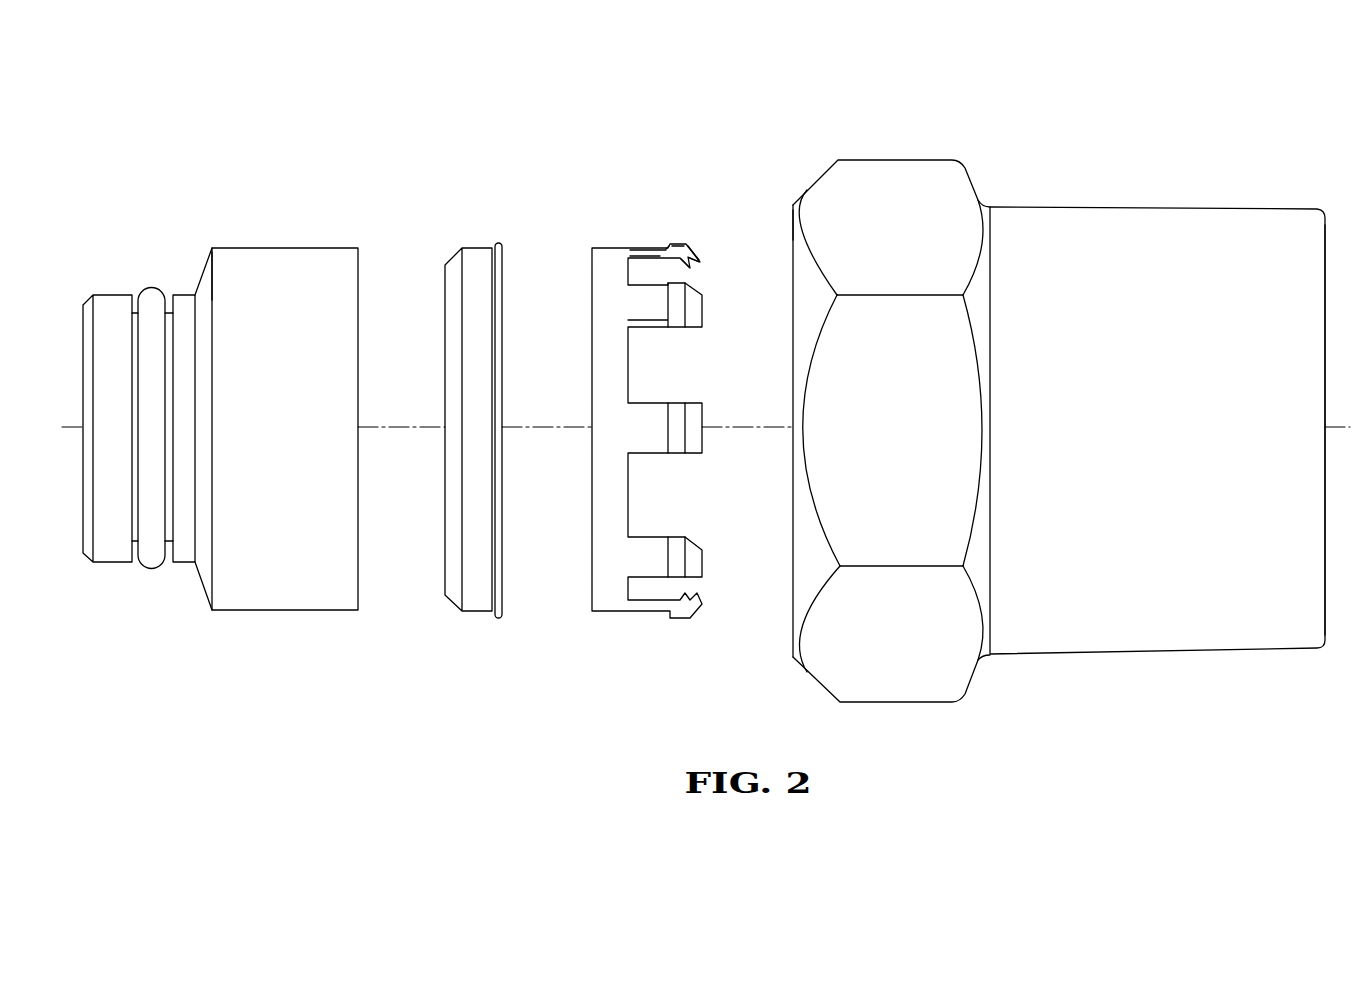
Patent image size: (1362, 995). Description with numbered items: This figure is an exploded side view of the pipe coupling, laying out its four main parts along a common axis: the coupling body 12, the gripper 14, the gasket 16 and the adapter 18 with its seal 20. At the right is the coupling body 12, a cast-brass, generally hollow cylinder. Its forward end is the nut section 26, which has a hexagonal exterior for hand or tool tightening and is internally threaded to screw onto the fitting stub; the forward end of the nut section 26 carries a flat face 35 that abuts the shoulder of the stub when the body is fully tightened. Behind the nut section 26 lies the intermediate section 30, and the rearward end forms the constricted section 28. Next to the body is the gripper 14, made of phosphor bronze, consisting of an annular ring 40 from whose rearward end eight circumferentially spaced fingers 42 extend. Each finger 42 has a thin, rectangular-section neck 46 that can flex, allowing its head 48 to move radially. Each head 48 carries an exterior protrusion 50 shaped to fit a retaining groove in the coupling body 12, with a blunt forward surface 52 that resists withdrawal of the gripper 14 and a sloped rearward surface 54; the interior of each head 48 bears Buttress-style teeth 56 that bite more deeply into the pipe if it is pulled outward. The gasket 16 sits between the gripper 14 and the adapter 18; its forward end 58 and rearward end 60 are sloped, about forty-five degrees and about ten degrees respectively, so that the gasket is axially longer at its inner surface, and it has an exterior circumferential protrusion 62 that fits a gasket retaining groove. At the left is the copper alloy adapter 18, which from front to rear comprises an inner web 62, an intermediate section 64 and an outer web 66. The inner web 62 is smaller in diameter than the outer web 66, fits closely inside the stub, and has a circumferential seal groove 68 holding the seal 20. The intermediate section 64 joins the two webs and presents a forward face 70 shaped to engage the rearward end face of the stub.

The coupling body 12 is at (1056, 360).
The gripper 14 is at (653, 339).
The gasket 16 is at (482, 339).
The adapter 18 is at (290, 335).
The seal 20 is at (153, 312).
The nut section 26 is at (892, 195).
The constricted section 28 is at (1312, 232).
The intermediate section 30 is at (1085, 232).
The flat face 35 is at (793, 208).
The annular ring 40 is at (598, 248).
The fingers 42 is at (650, 248).
The neck 46 is at (635, 248).
The head 48 is at (697, 254).
The exterior protrusion 50 is at (683, 245).
The blunt forward surface 52 is at (667, 247).
The sloped rearward surface 54 is at (701, 262).
The teeth 56 is at (690, 266).
The forward end 58 is at (452, 258).
The rearward end 60 is at (500, 256).
The inner web 62 is at (108, 318).
The intermediate section 64 is at (205, 307).
The outer web 66 is at (306, 275).
The seal groove 68 is at (171, 307).
The forward face 70 is at (207, 264).